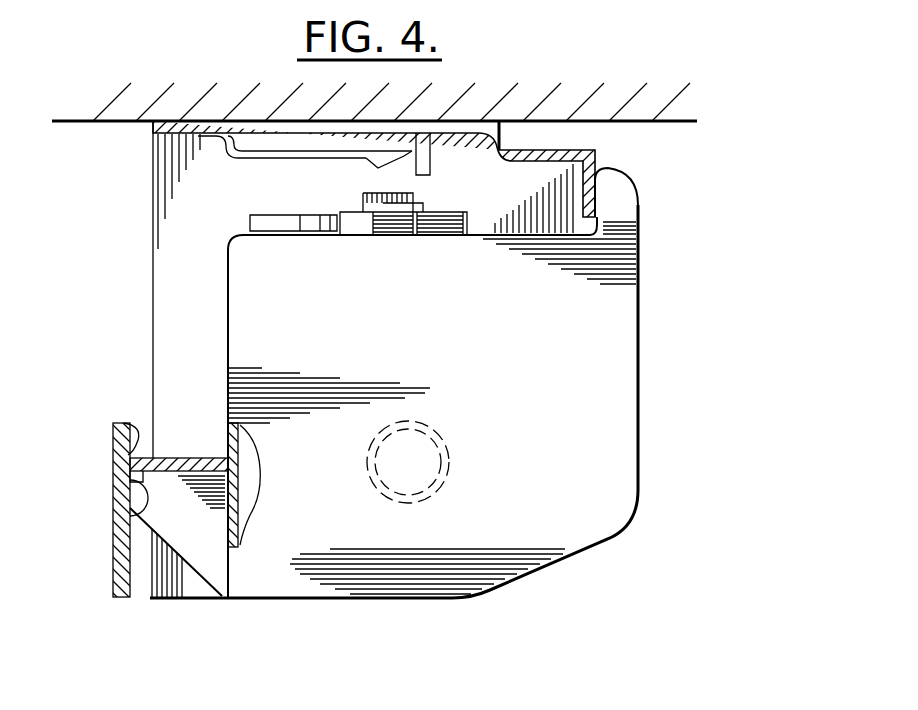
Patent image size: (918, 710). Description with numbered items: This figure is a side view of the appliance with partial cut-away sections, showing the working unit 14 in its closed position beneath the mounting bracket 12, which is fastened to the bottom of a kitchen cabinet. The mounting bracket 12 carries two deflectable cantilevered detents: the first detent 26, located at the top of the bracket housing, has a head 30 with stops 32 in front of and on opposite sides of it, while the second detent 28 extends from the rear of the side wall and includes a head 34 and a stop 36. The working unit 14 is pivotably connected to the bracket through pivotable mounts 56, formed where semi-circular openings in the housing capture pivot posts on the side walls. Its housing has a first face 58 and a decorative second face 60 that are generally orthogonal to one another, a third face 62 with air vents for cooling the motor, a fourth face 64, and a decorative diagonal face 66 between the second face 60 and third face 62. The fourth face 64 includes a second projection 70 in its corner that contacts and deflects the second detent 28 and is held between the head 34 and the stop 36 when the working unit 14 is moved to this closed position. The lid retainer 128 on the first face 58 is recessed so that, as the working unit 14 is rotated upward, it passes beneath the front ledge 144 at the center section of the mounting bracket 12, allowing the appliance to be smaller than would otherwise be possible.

The mounting bracket 12 is at (591, 160).
The working unit 14 is at (403, 413).
The first detent 26 is at (268, 164).
The second detent 28 is at (113, 455).
The head 30 is at (403, 159).
The stops 32 is at (429, 166).
The head 34 is at (137, 433).
The stop 36 is at (132, 520).
The pivotable mounts 56 is at (452, 474).
The first face 58 is at (250, 231).
The second face 60 is at (641, 332).
The third face 62 is at (298, 600).
The fourth face 64 is at (225, 333).
The diagonal face 66 is at (556, 558).
The second projection 70 is at (182, 458).
The lid retainer 128 is at (295, 237).
The front ledge 144 is at (620, 218).